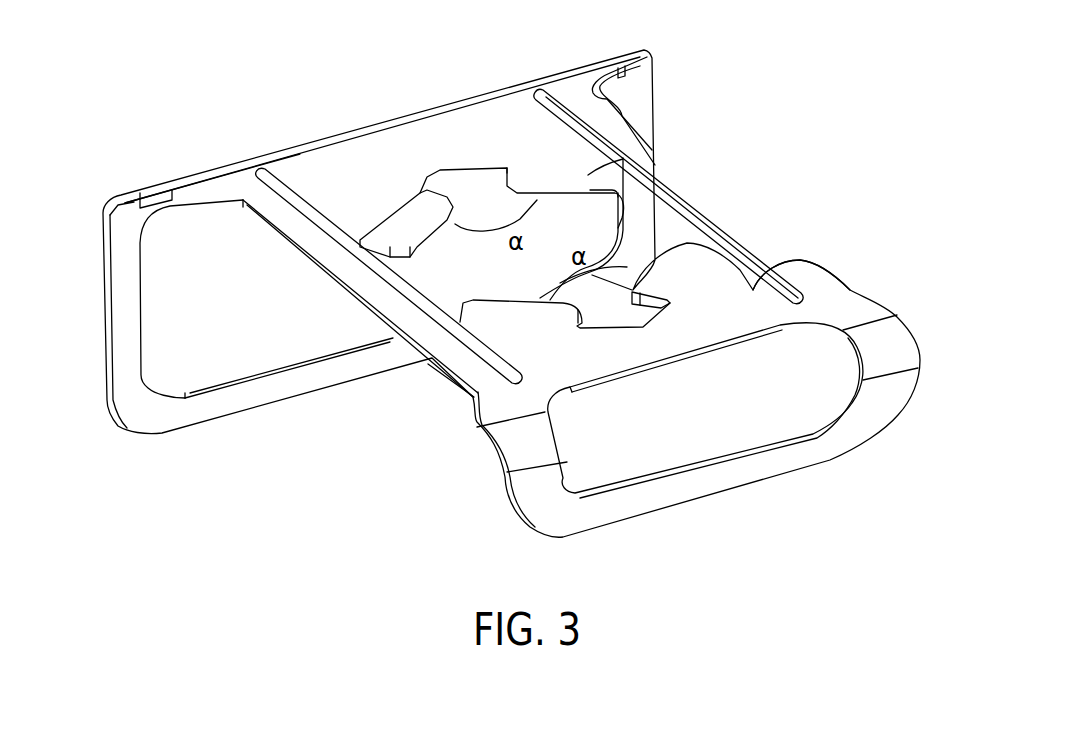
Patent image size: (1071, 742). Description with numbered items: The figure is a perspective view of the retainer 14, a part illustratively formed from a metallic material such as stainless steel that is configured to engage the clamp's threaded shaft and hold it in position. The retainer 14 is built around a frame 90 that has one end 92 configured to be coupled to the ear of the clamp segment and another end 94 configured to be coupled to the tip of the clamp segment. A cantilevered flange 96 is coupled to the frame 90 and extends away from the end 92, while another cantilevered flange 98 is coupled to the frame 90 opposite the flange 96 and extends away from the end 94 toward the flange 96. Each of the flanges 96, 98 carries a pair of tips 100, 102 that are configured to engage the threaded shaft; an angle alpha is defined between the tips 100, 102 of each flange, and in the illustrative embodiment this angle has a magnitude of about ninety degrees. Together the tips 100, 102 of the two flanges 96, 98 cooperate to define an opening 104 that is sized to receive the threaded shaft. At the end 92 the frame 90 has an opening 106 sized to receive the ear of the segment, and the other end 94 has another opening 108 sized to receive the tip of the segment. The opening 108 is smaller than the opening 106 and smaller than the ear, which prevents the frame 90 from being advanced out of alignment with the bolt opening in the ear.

The retainer 14 is at (856, 83).
The frame 90 is at (777, 250).
The end 92 is at (153, 420).
The end 94 is at (889, 420).
The cantilevered flange 96 is at (372, 150).
The cantilevered flange 98 is at (797, 262).
The tip 100 is at (383, 237).
The tip 102 is at (573, 147).
The opening 104 is at (567, 234).
The opening 106 is at (180, 315).
The opening 108 is at (720, 448).